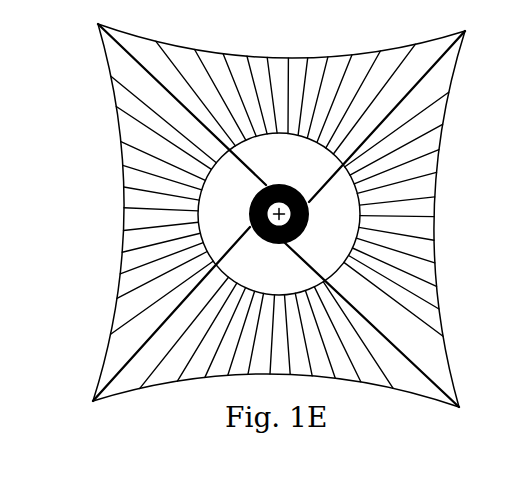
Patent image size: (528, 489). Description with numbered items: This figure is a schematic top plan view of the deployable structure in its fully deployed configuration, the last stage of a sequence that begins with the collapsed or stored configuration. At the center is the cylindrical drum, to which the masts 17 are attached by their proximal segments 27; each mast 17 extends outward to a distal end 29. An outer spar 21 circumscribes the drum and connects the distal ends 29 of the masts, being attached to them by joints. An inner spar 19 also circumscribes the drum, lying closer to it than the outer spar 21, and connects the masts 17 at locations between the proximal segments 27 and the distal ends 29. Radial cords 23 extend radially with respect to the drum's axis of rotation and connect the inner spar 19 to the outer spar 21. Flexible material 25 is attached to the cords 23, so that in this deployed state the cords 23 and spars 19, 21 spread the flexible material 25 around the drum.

The mast 17 is at (170, 95).
The inner spar 19 is at (360, 198).
The outer spar 21 is at (442, 150).
The radial cord 23 is at (435, 251).
The flexible material 25 is at (443, 337).
The proximal segment 27 is at (265, 177).
The distal end 29 is at (466, 32).